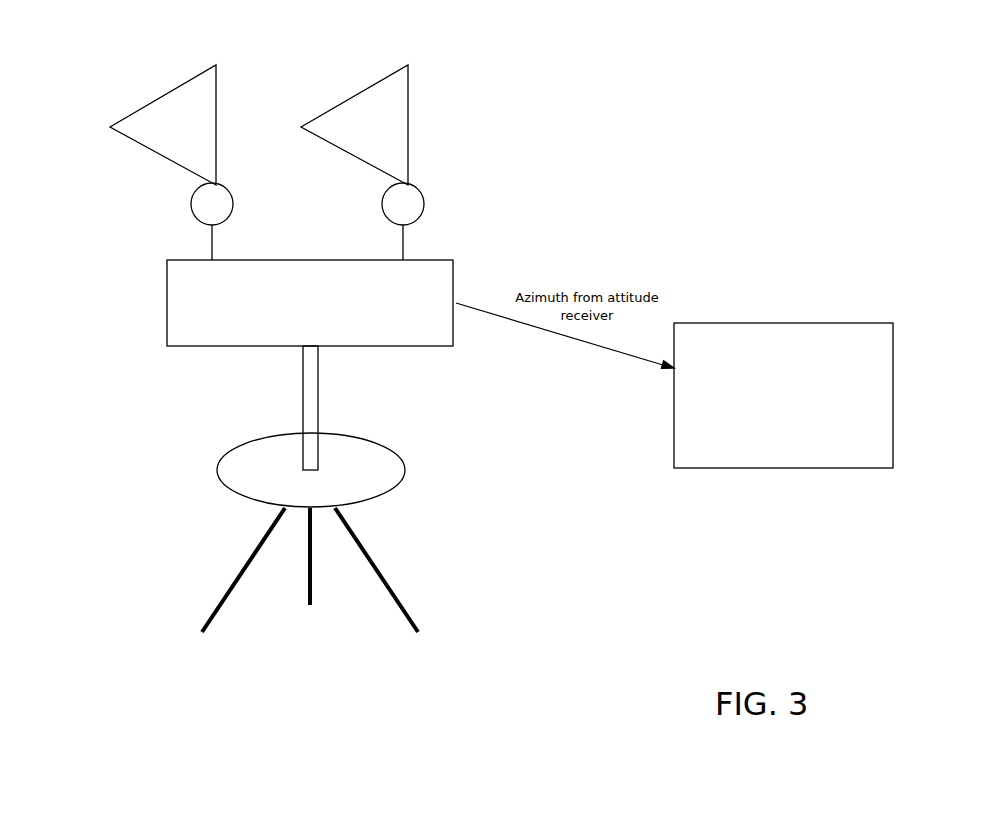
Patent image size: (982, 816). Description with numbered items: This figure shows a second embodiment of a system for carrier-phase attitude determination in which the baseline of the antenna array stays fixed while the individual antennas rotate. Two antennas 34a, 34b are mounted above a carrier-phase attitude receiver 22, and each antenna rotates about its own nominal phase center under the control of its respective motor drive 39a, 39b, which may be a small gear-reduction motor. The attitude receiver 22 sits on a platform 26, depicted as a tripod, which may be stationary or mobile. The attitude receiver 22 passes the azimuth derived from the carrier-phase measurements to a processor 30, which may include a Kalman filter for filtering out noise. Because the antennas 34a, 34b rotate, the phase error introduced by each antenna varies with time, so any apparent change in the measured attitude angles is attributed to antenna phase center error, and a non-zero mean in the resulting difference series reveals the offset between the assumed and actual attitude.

The antenna 34a is at (152, 100).
The antenna 34b is at (363, 88).
The motor drive 39a is at (191, 205).
The motor drive 39b is at (425, 203).
The carrier-phase attitude receiver 22 is at (167, 303).
The platform 26 is at (233, 582).
The processor 30 is at (811, 468).